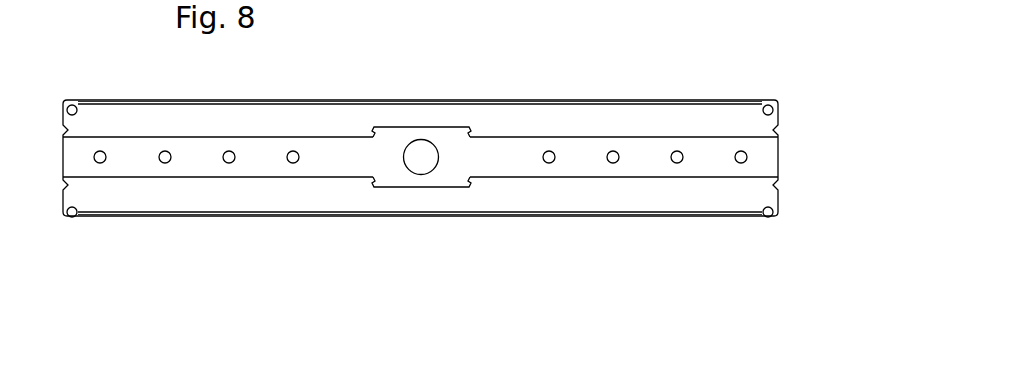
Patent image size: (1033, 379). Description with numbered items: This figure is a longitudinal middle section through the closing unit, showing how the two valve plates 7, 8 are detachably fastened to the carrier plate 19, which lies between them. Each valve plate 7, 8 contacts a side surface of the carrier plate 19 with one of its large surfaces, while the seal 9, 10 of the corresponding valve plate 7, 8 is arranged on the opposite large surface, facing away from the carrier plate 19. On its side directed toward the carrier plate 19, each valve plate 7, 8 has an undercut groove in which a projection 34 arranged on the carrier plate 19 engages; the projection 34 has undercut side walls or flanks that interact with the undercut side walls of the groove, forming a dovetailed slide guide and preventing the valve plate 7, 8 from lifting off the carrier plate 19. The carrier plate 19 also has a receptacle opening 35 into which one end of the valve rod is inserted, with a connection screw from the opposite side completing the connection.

The valve plate 7 is at (692, 193).
The valve plate 8 is at (565, 117).
The seal 9 is at (765, 215).
The seal 10 is at (767, 105).
The carrier plate 19 is at (640, 152).
The projection 34 is at (453, 132).
The receptacle opening 35 is at (420, 166).